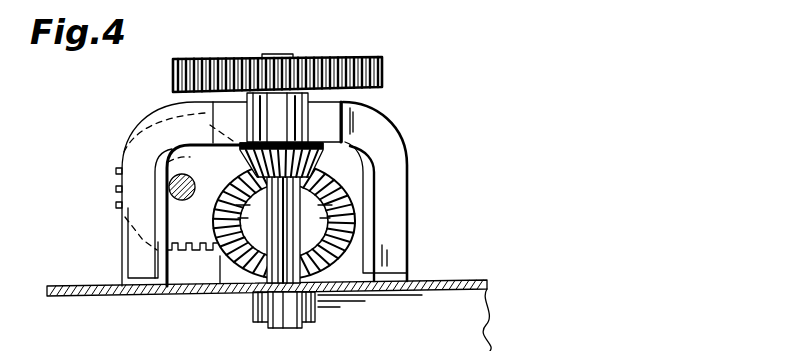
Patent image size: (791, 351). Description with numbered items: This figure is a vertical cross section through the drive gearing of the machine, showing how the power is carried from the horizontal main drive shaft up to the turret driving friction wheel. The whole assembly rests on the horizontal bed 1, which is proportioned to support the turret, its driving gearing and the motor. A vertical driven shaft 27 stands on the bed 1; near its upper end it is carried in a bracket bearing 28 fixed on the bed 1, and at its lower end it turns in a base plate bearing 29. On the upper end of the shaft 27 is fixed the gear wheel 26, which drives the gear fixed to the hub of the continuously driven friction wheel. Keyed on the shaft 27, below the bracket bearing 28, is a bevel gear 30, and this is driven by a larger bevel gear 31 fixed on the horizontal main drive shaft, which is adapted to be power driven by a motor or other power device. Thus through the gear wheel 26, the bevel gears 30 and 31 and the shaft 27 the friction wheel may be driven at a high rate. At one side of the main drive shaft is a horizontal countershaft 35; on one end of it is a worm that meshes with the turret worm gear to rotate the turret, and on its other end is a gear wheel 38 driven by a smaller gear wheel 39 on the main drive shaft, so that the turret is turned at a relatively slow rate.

The bed 1 is at (62, 286).
The gear wheel 26 is at (383, 73).
The vertical driven shaft 27 is at (282, 247).
The bracket bearing 28 is at (247, 117).
The base plate bearing 29 is at (317, 312).
The bevel gear 30 is at (315, 160).
The bevel gear 31 is at (318, 190).
The countershaft 35 is at (170, 180).
The gear wheel 38 is at (178, 236).
The gear wheel 39 is at (224, 259).